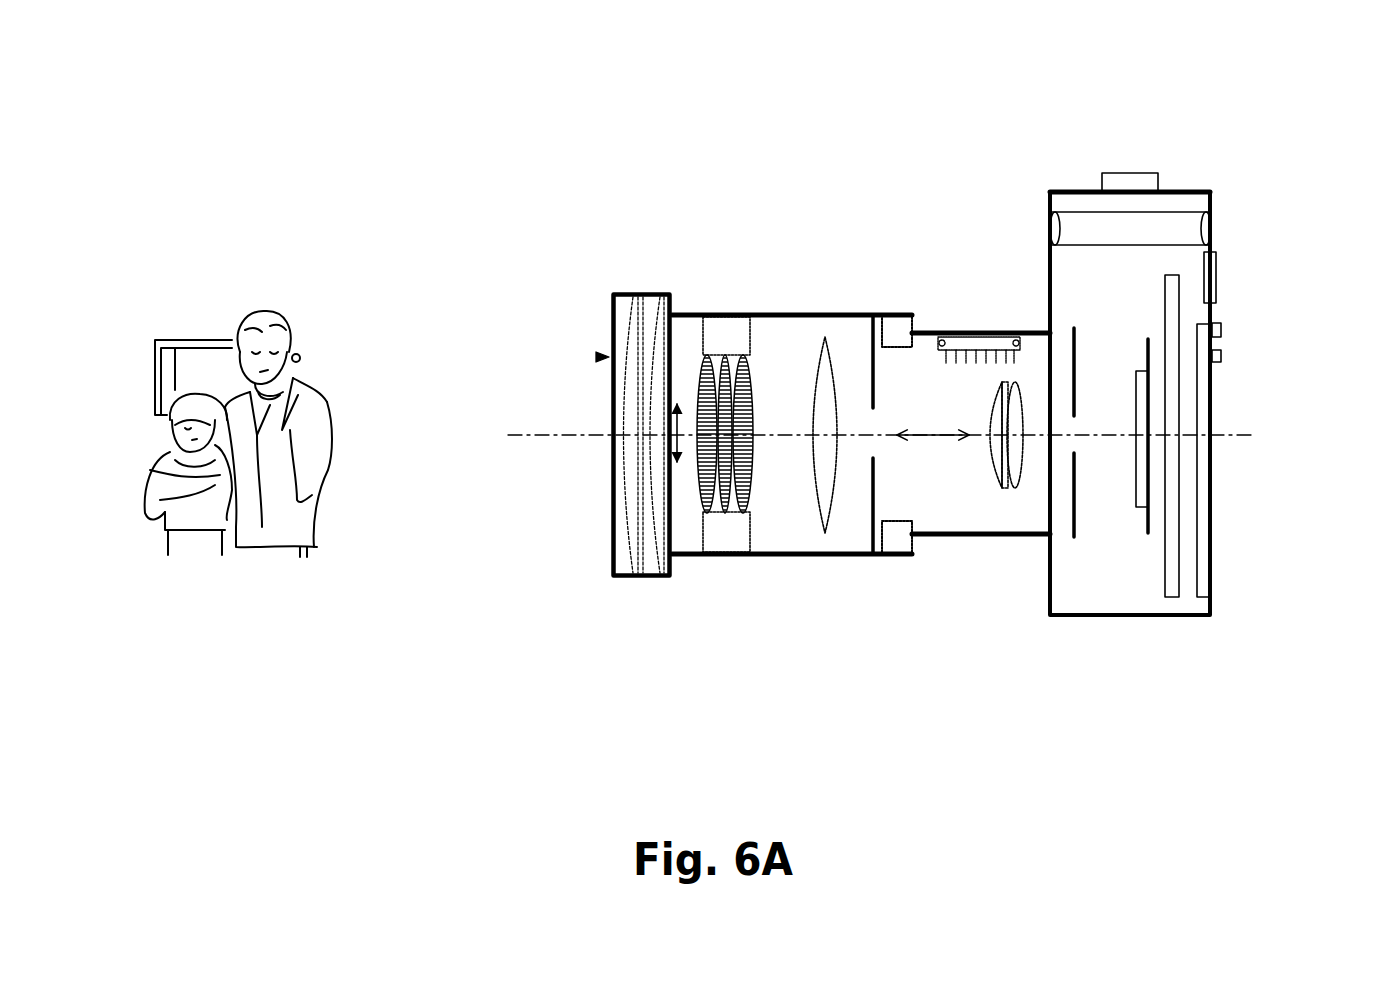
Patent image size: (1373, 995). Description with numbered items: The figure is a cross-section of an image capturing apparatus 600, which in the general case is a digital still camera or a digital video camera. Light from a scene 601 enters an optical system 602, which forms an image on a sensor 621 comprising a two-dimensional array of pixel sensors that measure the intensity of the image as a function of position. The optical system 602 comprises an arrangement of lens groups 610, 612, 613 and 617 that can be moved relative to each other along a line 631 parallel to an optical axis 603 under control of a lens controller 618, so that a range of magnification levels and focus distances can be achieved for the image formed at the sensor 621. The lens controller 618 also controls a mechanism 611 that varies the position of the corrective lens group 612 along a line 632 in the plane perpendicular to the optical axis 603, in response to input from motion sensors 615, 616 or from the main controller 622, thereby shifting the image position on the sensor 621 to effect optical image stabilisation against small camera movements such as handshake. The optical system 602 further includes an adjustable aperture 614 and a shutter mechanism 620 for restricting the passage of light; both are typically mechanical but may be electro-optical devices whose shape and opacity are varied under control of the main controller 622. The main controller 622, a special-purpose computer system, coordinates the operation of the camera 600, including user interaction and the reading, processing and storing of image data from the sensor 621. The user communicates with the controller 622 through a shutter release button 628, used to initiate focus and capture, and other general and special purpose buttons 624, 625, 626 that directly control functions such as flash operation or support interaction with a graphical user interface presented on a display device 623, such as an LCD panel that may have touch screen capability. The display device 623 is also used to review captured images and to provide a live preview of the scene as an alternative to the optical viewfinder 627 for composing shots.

The image capturing apparatus 600 is at (520, 197).
The scene 601 is at (197, 343).
The optical system 602 is at (596, 357).
The optical axis 603 is at (577, 435).
The lens group 610 is at (612, 577).
The mechanism 611 is at (716, 325).
The corrective lens group 612 is at (750, 388).
The lens group 613 is at (817, 500).
The adjustable aperture 614 is at (870, 507).
The motion sensor 615 is at (900, 325).
The motion sensor 616 is at (897, 537).
The lens group 617 is at (1012, 488).
The lens controller 618 is at (1010, 333).
The shutter mechanism 620 is at (1073, 537).
The sensor 621 is at (1139, 510).
The main controller 622 is at (1175, 597).
The display device 623 is at (1205, 510).
The button 624 is at (1223, 358).
The button 625 is at (1223, 327).
The button 626 is at (1218, 278).
The optical viewfinder 627 is at (1213, 227).
The shutter release button 628 is at (1130, 183).
The line 631 is at (940, 433).
The line 632 is at (678, 427).